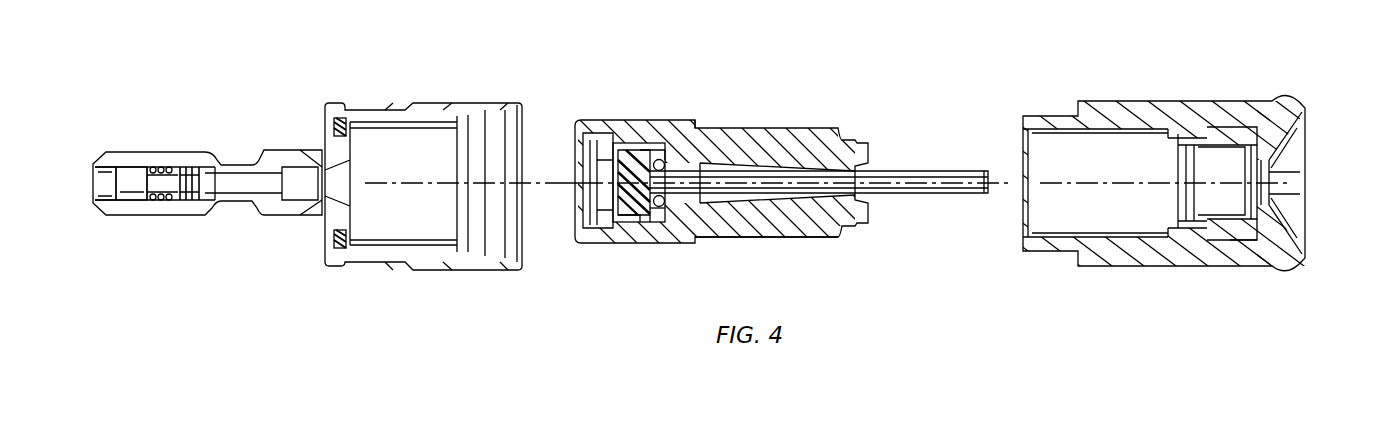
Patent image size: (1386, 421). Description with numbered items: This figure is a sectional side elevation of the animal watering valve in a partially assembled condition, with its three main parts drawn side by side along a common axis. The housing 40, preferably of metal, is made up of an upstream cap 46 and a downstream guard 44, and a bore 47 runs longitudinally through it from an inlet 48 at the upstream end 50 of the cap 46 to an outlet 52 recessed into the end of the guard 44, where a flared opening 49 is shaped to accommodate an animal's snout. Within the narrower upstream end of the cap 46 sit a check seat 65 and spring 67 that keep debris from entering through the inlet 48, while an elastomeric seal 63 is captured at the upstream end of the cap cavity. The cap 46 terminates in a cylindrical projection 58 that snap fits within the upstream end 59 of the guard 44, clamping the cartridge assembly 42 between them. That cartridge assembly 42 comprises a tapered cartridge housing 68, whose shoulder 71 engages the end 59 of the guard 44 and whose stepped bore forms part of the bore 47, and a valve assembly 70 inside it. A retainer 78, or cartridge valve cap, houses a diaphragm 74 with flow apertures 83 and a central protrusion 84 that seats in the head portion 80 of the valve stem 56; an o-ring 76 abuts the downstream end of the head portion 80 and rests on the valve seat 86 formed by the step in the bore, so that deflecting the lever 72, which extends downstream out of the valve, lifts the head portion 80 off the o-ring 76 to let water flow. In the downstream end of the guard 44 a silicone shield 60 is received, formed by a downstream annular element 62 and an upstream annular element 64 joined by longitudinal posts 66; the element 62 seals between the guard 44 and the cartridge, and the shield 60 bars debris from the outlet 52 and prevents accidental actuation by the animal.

The housing 40 is at (1110, 100).
The cartridge assembly 42 is at (792, 126).
The downstream guard 44 is at (1133, 108).
The upstream cap 46 is at (345, 102).
The bore 47 is at (802, 166).
The inlet 48 is at (96, 200).
The flared opening 49 is at (1285, 150).
The upstream end 50 is at (97, 148).
The outlet 52 is at (1282, 178).
The valve stem 56 is at (894, 169).
The cylindrical projection 58 is at (498, 103).
The upstream end of the guard 59 is at (1046, 114).
The shield 60 is at (1246, 244).
The downstream annular element 62 is at (1258, 215).
The elastomeric seal 63 is at (337, 128).
The upstream annular element 64 is at (1184, 140).
The check seat 65 is at (135, 172).
The posts 66 is at (1219, 140).
The spring 67 is at (190, 198).
The cartridge housing 68 is at (798, 238).
The valve assembly 70 is at (650, 224).
The shoulder 71 is at (700, 122).
The lever 72 is at (968, 171).
The diaphragm 74 is at (633, 150).
The o-ring 76 is at (663, 162).
The retainer 78 is at (603, 226).
The head portion 80 is at (655, 150).
The apertures 83 is at (635, 230).
The central protrusion 84 is at (667, 226).
The valve seat 86 is at (663, 224).